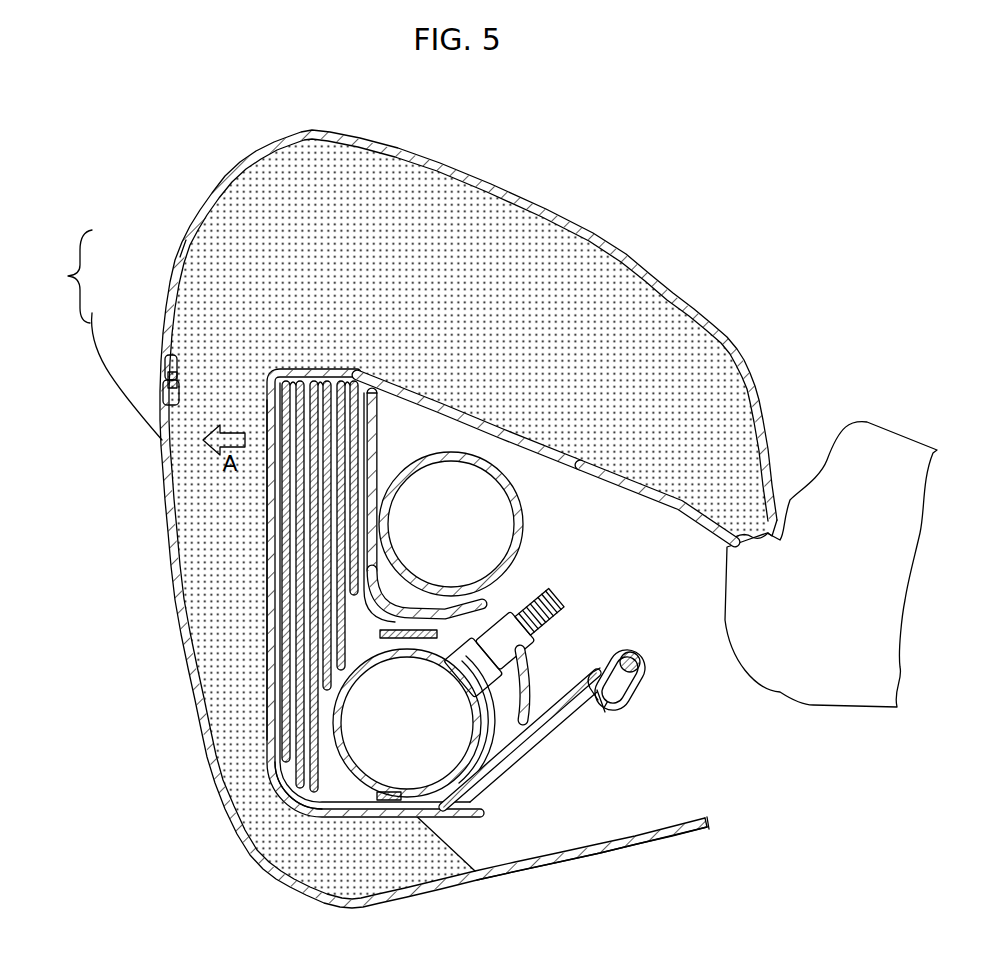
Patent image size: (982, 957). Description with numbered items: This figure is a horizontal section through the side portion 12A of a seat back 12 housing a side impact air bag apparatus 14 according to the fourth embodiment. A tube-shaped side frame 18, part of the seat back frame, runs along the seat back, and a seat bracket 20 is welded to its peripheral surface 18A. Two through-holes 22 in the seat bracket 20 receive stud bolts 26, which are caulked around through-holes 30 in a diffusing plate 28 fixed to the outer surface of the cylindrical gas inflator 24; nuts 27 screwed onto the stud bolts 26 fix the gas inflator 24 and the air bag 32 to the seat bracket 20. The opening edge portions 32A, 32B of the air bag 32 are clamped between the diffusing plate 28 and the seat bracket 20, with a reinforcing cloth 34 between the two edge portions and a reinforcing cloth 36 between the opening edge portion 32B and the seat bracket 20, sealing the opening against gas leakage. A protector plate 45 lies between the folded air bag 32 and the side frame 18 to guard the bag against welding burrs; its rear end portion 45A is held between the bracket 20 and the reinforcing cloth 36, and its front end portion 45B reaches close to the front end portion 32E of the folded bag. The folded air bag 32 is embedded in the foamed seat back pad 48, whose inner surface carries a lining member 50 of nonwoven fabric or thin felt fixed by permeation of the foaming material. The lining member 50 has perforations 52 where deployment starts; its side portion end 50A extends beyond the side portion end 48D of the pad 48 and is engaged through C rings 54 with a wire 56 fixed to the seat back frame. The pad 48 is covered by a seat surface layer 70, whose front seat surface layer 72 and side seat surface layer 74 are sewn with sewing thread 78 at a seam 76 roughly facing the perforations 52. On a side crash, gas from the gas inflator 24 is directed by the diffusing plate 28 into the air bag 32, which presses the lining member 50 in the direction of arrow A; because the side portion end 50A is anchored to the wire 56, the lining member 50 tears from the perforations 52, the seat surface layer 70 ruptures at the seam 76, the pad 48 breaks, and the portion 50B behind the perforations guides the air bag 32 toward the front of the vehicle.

The seat back 12 is at (875, 380).
The side portion 12A is at (601, 236).
The side impact air bag apparatus 14 is at (278, 814).
The side frame 18 is at (530, 514).
The peripheral surface 18A is at (398, 466).
The seat bracket 20 is at (480, 603).
The through-holes 22 is at (514, 660).
The gas inflator 24 is at (492, 778).
The stud bolts 26 is at (563, 612).
The nuts 27 is at (506, 597).
The diffusing plate 28 is at (455, 793).
The through-holes 30 is at (472, 690).
The air bag 32 is at (282, 642).
The opening edge portion 32A is at (405, 639).
The opening edge portion 32B is at (503, 768).
The front end portion 32E is at (346, 377).
The reinforcing cloth 34 is at (515, 727).
The reinforcing cloth 36 is at (596, 702).
The protector plate 45 is at (378, 421).
The rear end portion 45A is at (518, 690).
The front end portion 45B is at (376, 401).
The seat back pad 48 is at (437, 193).
The side portion end 48D is at (478, 870).
The lining member 50 is at (258, 527).
The side portion end 50A is at (618, 712).
The portion 50B is at (268, 606).
The perforations 52 is at (268, 402).
The C rings 54 is at (638, 683).
The wire 56 is at (642, 662).
The seat surface layer 70 is at (64, 276).
The front seat surface layer 72 is at (180, 257).
The side seat surface layer 74 is at (121, 366).
The seam 76 is at (158, 375).
The sewing thread 78 is at (180, 380).